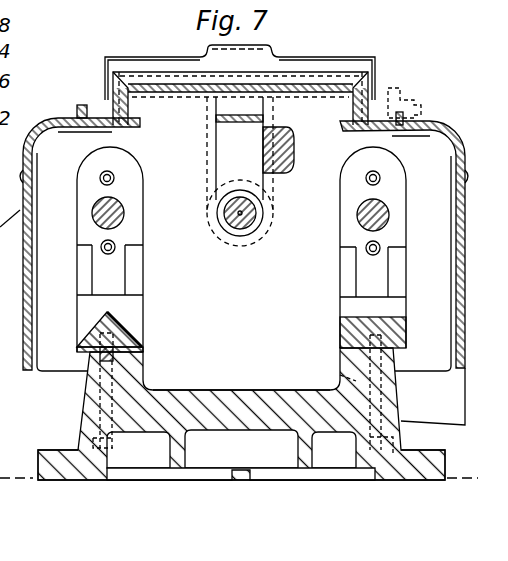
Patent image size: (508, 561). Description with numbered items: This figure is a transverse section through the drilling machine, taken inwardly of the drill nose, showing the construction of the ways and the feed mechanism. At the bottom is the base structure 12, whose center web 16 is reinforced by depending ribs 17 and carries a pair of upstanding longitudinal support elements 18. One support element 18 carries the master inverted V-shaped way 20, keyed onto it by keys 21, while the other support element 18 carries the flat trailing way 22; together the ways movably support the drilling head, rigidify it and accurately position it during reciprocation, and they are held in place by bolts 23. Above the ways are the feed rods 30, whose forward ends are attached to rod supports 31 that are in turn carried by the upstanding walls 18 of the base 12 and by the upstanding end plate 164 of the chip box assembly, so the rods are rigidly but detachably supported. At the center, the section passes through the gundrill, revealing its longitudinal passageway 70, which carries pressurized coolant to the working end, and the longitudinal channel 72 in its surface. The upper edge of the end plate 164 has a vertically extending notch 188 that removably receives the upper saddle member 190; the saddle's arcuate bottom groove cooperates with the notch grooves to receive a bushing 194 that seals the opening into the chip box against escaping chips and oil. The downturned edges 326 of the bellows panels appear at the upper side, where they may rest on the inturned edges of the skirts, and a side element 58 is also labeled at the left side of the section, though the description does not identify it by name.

The base structure 12 is at (55, 465).
The center web 16 is at (168, 404).
The depending ribs 17 is at (177, 453).
The upstanding longitudinal support elements 18 is at (130, 377).
The inverted V-shaped way 20 is at (115, 323).
The keys 21 is at (90, 365).
The flat way 22 is at (343, 318).
The bolts 23 is at (340, 375).
The feed rods 30 is at (118, 202).
The rod supports 31 is at (133, 268).
The side cover 58 is at (20, 343).
The longitudinal passageway 70 is at (248, 237).
The longitudinal channel 72 is at (238, 208).
The end plate 164 is at (358, 138).
The vertically extending notch 188 is at (225, 138).
The upper saddle member 190 is at (245, 133).
The bushing 194 is at (242, 198).
The downturned edges 326 is at (117, 112).